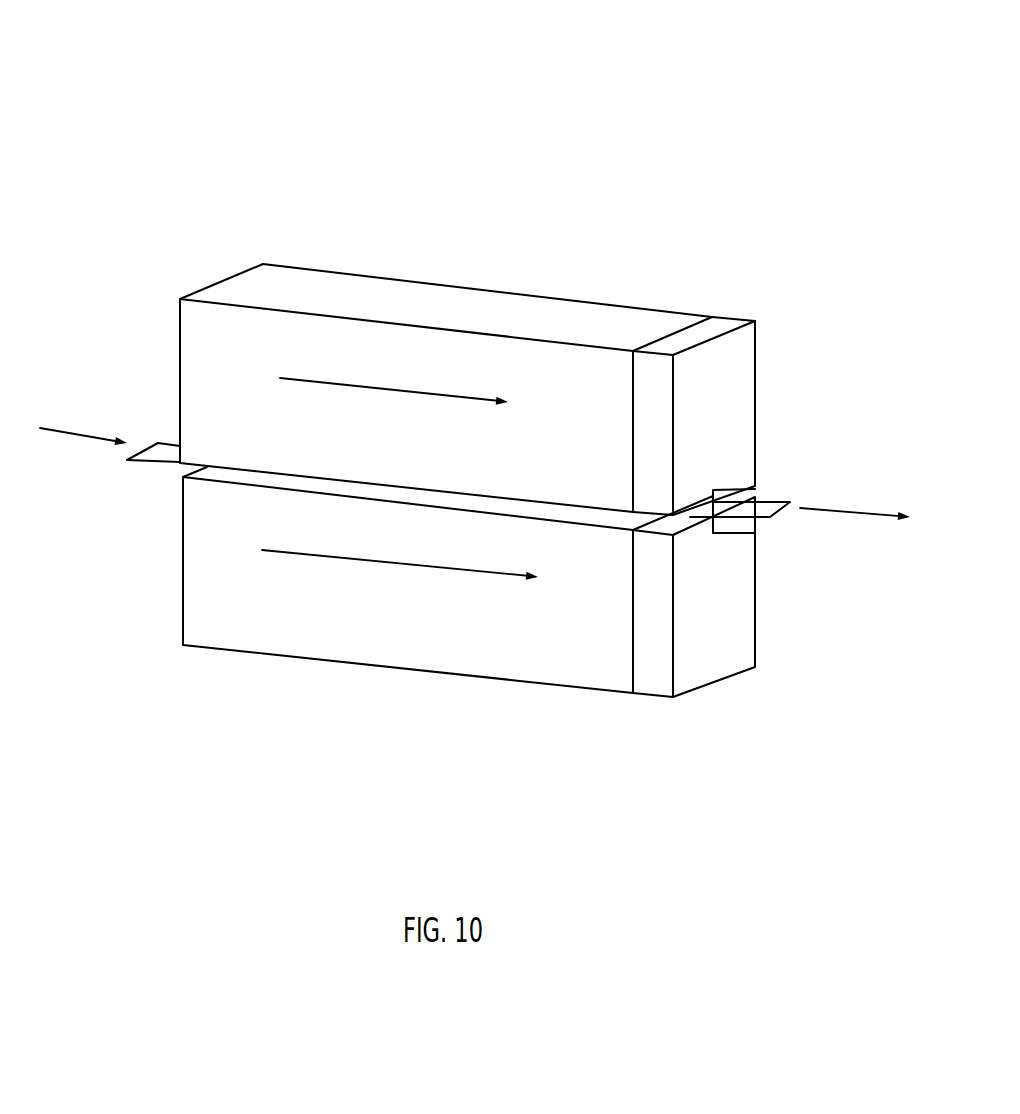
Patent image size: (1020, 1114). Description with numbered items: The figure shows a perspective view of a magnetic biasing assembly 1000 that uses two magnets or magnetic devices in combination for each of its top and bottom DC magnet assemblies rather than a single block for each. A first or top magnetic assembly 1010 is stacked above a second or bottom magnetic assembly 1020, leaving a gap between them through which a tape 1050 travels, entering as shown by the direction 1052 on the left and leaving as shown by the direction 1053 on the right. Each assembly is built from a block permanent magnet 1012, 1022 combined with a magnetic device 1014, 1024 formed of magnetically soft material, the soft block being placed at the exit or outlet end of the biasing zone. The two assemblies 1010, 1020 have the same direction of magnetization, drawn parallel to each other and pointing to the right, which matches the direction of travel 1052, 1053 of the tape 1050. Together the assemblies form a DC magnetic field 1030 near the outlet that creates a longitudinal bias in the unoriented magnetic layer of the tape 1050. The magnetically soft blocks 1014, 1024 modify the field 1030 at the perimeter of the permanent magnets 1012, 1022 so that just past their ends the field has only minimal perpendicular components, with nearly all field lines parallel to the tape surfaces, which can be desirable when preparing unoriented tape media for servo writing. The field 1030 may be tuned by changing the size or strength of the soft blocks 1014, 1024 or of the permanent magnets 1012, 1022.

The magnetic biasing assembly 1000 is at (228, 110).
The first or top magnetic assembly 1010 is at (498, 280).
The block permanent magnet 1012 is at (305, 298).
The magnetic device 1014 is at (728, 413).
The second or bottom magnetic assembly 1020 is at (378, 676).
The block permanent magnet 1022 is at (355, 610).
The magnetic device 1024 is at (735, 620).
The DC magnetic field 1030 is at (770, 485).
The tape 1050 is at (150, 464).
The direction of travel 1052 is at (65, 432).
The direction of travel 1053 is at (865, 513).